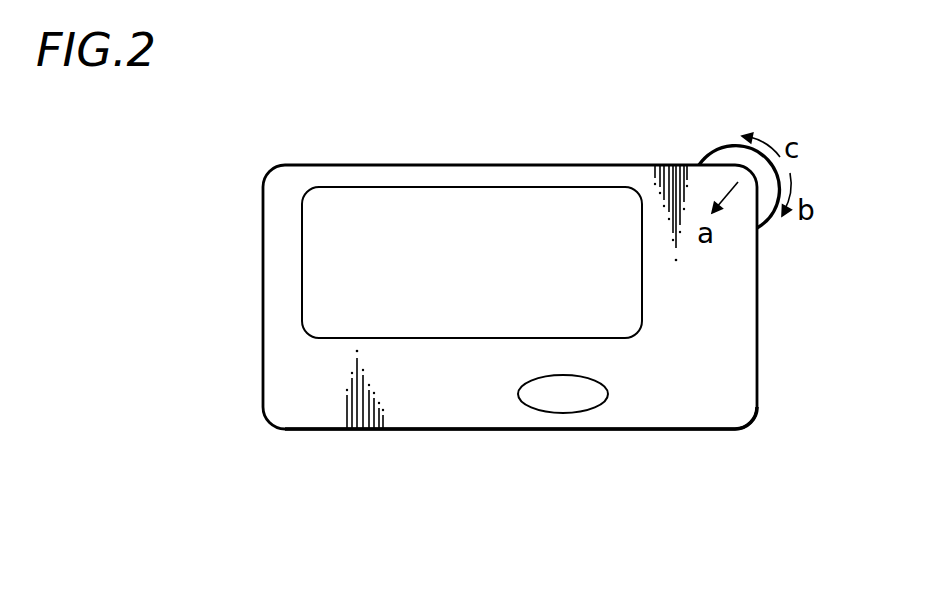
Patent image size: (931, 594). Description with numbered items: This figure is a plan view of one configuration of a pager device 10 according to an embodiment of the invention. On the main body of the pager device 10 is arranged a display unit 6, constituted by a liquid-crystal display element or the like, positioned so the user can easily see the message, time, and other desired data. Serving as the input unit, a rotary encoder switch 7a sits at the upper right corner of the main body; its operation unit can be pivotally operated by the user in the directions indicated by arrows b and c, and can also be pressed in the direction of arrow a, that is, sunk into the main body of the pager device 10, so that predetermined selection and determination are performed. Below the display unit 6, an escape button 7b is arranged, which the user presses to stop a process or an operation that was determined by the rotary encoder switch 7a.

The pager device 10 is at (426, 571).
The display unit 6 is at (376, 200).
The rotary encoder switch 7a is at (735, 146).
The escape button 7b is at (564, 400).